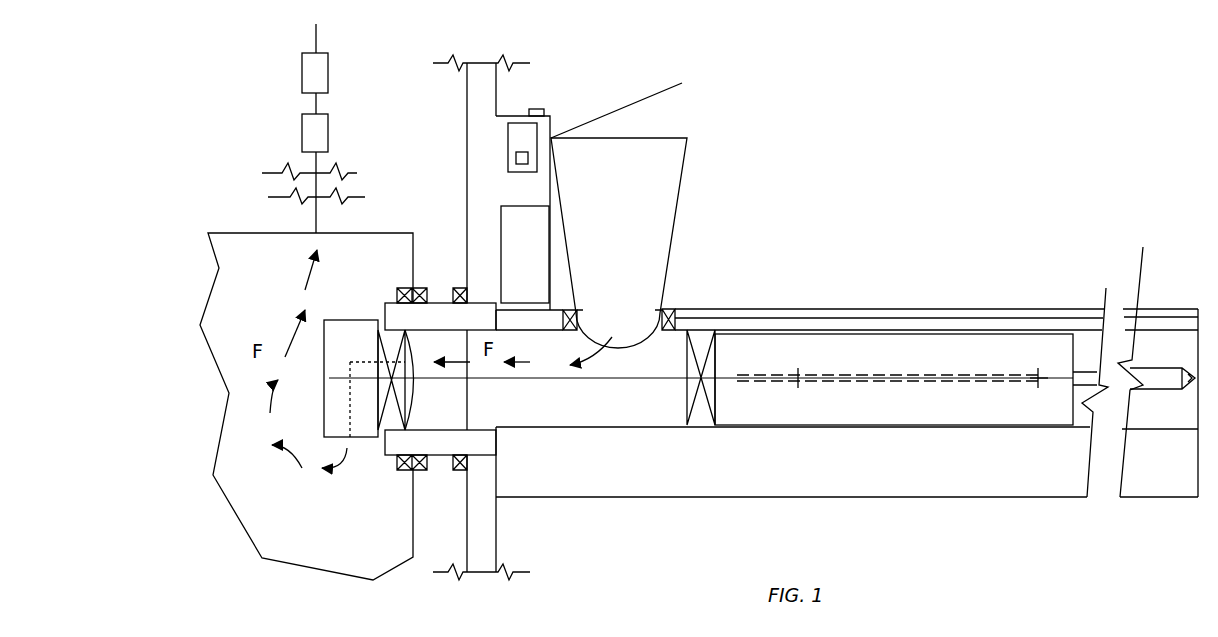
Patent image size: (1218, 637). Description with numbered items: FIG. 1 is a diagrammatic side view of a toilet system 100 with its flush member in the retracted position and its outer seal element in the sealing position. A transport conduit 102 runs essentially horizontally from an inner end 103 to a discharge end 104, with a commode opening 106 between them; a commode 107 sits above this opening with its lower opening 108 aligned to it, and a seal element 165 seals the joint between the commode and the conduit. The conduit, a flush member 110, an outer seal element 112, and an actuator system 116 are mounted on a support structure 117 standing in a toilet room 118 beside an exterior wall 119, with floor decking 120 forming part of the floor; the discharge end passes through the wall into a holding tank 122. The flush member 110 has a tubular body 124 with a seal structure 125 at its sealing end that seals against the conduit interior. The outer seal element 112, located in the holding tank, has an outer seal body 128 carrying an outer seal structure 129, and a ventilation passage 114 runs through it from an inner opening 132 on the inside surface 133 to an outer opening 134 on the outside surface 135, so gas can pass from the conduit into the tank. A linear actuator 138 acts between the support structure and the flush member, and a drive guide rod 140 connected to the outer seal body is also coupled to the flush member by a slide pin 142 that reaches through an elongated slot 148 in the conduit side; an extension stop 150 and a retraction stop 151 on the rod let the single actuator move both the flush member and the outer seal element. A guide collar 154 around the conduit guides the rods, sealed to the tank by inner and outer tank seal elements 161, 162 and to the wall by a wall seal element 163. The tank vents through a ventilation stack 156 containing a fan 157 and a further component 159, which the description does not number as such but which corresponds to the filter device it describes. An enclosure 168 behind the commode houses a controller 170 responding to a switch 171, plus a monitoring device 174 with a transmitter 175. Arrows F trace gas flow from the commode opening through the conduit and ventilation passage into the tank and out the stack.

The toilet system 100 is at (888, 198).
The transport conduit 102 is at (683, 328).
The inner end 103 is at (1148, 318).
The discharge end 104 is at (422, 417).
The commode opening 106 is at (622, 346).
The commode 107 is at (685, 185).
The lower opening 108 is at (624, 301).
The flush member 110 is at (732, 350).
The outer seal element 112 is at (373, 457).
The ventilation passage 114 is at (365, 362).
The actuator system 116 is at (1157, 408).
The support structure 117 is at (960, 497).
The toilet room 118 is at (1015, 221).
The exterior wall 119 is at (467, 112).
The floor decking 120 is at (893, 309).
The holding tank 122 is at (385, 233).
The tubular body 124 is at (768, 425).
The seal structure 125 is at (687, 408).
The outer seal body 128 is at (352, 320).
The outer seal structure 129 is at (392, 445).
The inner opening 132 is at (432, 362).
The inside surface 133 is at (412, 385).
The outer opening 134 is at (352, 440).
The outside surface 135 is at (327, 442).
The linear actuator 138 is at (1165, 372).
The drive guide rod 140 is at (607, 382).
The slide pin 142 is at (1038, 378).
The elongated slot 148 is at (862, 384).
The extension stop 150 is at (800, 378).
The retraction stop 151 is at (1040, 385).
The guide collar 154 is at (467, 440).
The ventilation stack 156 is at (318, 38).
The fan 157 is at (330, 133).
The valve 159 is at (302, 68).
The inner tank seal element 161 is at (405, 288).
The outer tank seal element 162 is at (460, 288).
The wall seal element 163 is at (460, 470).
The seal element 165 is at (670, 309).
The enclosure 168 is at (505, 116).
The controller 170 is at (525, 254).
The switch 171 is at (538, 109).
The monitoring device 174 is at (535, 135).
The transmitter 175 is at (530, 158).